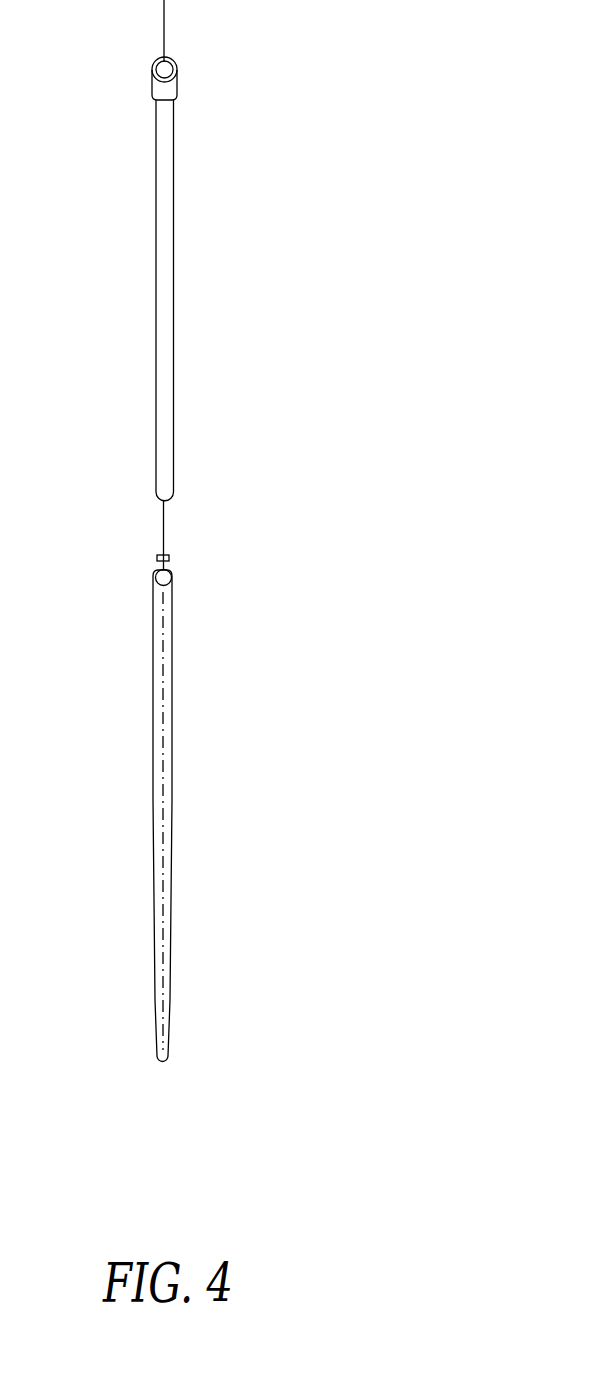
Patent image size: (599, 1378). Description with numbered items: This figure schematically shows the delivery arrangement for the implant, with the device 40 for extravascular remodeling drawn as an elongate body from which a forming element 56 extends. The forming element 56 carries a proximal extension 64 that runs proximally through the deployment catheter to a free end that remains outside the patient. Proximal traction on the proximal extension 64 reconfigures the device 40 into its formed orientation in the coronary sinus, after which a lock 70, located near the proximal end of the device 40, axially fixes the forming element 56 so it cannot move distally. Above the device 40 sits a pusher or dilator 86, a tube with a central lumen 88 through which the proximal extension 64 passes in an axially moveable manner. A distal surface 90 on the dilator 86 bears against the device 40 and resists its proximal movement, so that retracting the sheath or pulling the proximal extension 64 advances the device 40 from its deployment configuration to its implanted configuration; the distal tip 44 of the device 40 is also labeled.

The device 40 is at (250, 825).
The distal tip of rod 44 is at (160, 1063).
The forming element 56 is at (162, 682).
The proximal extension 64 is at (164, 35).
The lock 70 is at (170, 558).
The dilator 86 is at (163, 150).
The central lumen 88 is at (161, 324).
The distal surface 90 is at (156, 497).